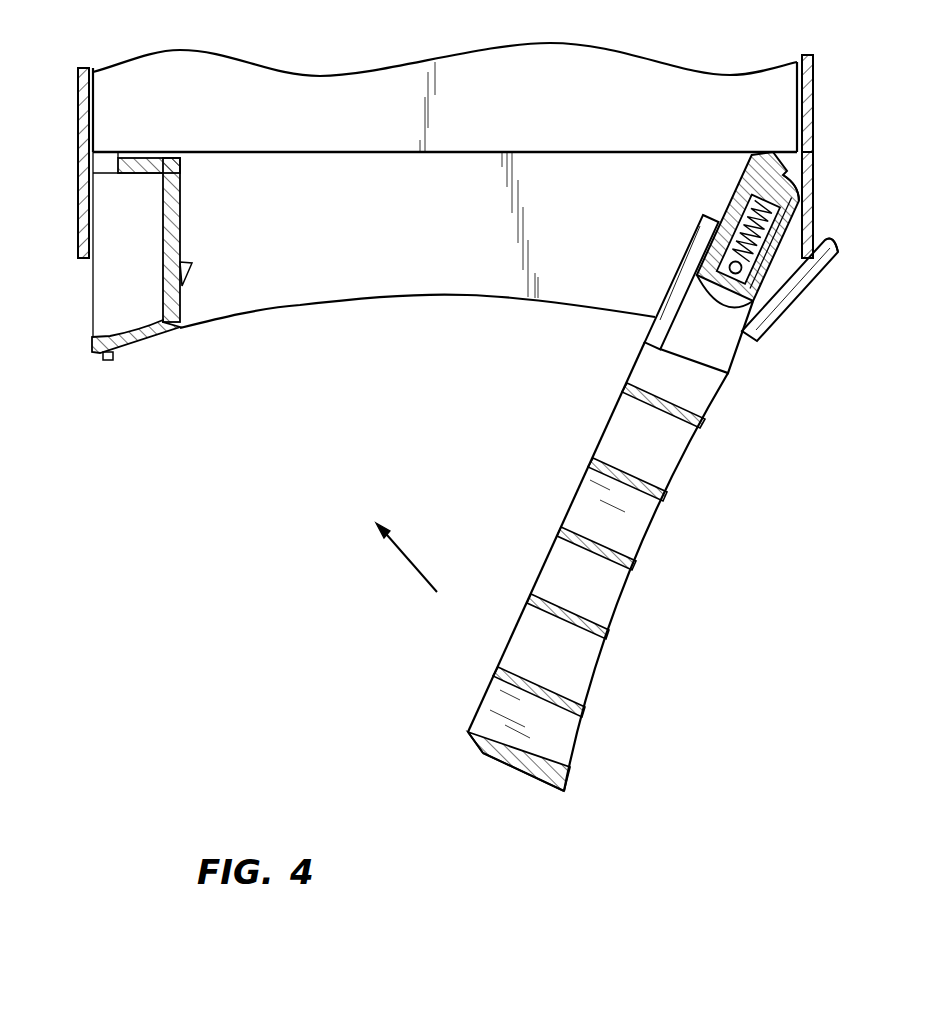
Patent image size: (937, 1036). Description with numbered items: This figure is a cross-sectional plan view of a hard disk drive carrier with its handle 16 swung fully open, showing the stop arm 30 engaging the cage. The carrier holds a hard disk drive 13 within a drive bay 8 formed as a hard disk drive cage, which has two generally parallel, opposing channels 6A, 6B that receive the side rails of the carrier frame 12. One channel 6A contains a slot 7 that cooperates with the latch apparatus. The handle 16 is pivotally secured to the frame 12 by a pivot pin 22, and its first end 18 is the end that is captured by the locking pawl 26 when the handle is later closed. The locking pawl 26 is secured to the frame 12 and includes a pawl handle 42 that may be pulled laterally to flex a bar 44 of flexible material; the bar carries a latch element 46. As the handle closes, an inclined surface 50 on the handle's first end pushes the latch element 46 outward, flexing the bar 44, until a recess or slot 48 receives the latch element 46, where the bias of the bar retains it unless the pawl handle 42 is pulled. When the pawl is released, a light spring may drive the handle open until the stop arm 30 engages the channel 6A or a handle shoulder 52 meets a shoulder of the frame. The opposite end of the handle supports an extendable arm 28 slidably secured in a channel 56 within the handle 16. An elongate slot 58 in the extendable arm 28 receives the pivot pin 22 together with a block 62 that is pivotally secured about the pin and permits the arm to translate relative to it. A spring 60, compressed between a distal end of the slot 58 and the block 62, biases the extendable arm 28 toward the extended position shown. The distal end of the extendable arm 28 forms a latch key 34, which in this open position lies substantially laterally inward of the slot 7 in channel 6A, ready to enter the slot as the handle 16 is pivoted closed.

The channel 6A is at (813, 85).
The channel 6B is at (78, 140).
The slot 7 is at (814, 182).
The drive bay 8 is at (78, 100).
The frame 12 is at (327, 290).
The hard disk drive 13 is at (518, 103).
The handle 16 is at (625, 588).
The first end 18 is at (544, 786).
The pivot pin 22 is at (724, 258).
The locking pawl 26 is at (143, 343).
The extendable arm 28 is at (746, 182).
The stop arm 30 is at (833, 247).
The latch key 34 is at (795, 168).
The pawl handle 42 is at (108, 362).
The bar 44 is at (183, 203).
The latch element 46 is at (188, 270).
The slot 48 is at (515, 757).
The inclined surface 50 is at (470, 745).
The handle shoulder 52 is at (791, 252).
The channel 56 is at (677, 337).
The elongate slot 58 is at (713, 220).
The spring 60 is at (750, 197).
The block 62 is at (745, 306).